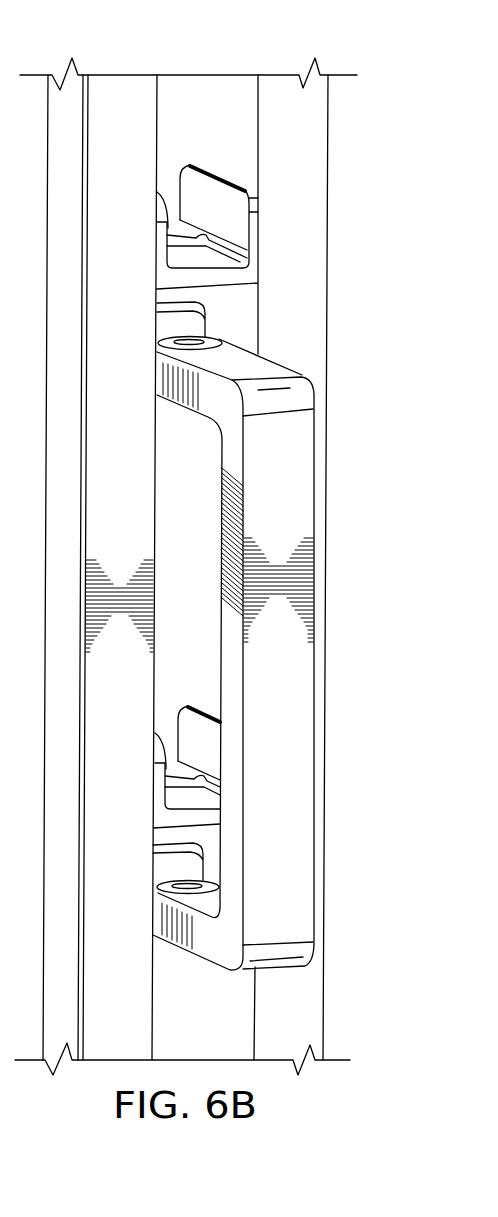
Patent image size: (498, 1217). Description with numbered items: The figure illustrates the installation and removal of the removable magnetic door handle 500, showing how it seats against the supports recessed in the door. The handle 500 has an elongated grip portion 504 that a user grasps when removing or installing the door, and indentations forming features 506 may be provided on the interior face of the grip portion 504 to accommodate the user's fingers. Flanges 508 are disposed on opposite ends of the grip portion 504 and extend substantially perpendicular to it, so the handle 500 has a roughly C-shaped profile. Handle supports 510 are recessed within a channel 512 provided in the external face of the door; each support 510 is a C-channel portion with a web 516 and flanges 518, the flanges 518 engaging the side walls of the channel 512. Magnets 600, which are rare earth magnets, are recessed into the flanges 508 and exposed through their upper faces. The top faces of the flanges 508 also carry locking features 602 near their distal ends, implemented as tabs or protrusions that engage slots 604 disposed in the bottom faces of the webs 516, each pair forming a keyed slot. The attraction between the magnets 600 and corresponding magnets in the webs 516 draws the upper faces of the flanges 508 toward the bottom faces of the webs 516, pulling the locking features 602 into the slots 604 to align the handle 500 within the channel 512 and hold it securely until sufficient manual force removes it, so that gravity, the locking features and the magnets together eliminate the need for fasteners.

The removable magnetic door handle 500 is at (320, 481).
The grip portion 504 is at (302, 527).
The features 506 is at (218, 618).
The flanges 508 is at (263, 368).
The handle supports 510 is at (205, 150).
The channel 512 is at (238, 104).
The web 516 is at (219, 196).
The flanges 518 is at (214, 262).
The magnets 600 is at (160, 338).
The locking features 602 is at (193, 302).
The slots 604 is at (204, 240).